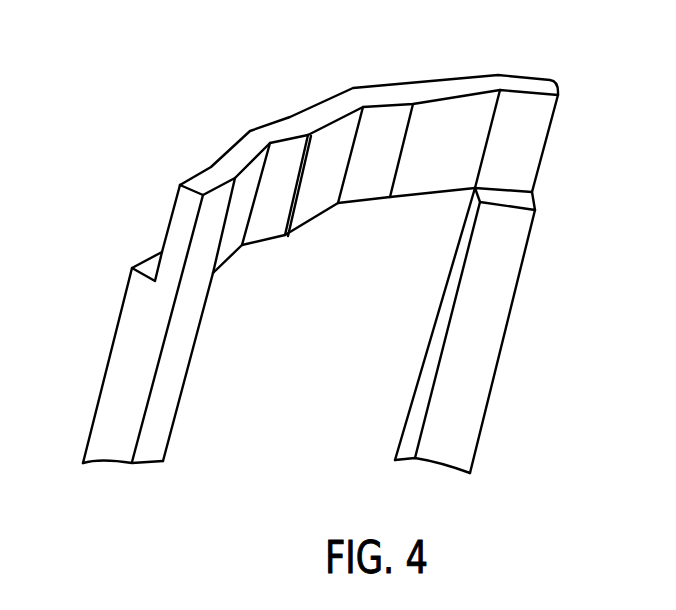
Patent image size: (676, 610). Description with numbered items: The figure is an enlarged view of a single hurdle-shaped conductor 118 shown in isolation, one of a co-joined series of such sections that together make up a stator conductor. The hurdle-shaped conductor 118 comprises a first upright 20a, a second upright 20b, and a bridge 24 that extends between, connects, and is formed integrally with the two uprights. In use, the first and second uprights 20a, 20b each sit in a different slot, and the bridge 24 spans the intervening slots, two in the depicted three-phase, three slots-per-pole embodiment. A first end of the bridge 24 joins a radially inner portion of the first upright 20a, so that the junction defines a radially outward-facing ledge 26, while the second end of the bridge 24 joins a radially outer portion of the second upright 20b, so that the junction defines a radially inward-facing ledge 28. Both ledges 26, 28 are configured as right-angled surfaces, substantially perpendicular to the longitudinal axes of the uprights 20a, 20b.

The hurdle-shaped conductor 118 is at (236, 107).
The bridge 24 is at (360, 102).
The first upright 20a is at (110, 402).
The second upright 20b is at (460, 435).
The radially outward-facing ledge 26 is at (148, 265).
The radially inward-facing ledge 28 is at (520, 202).